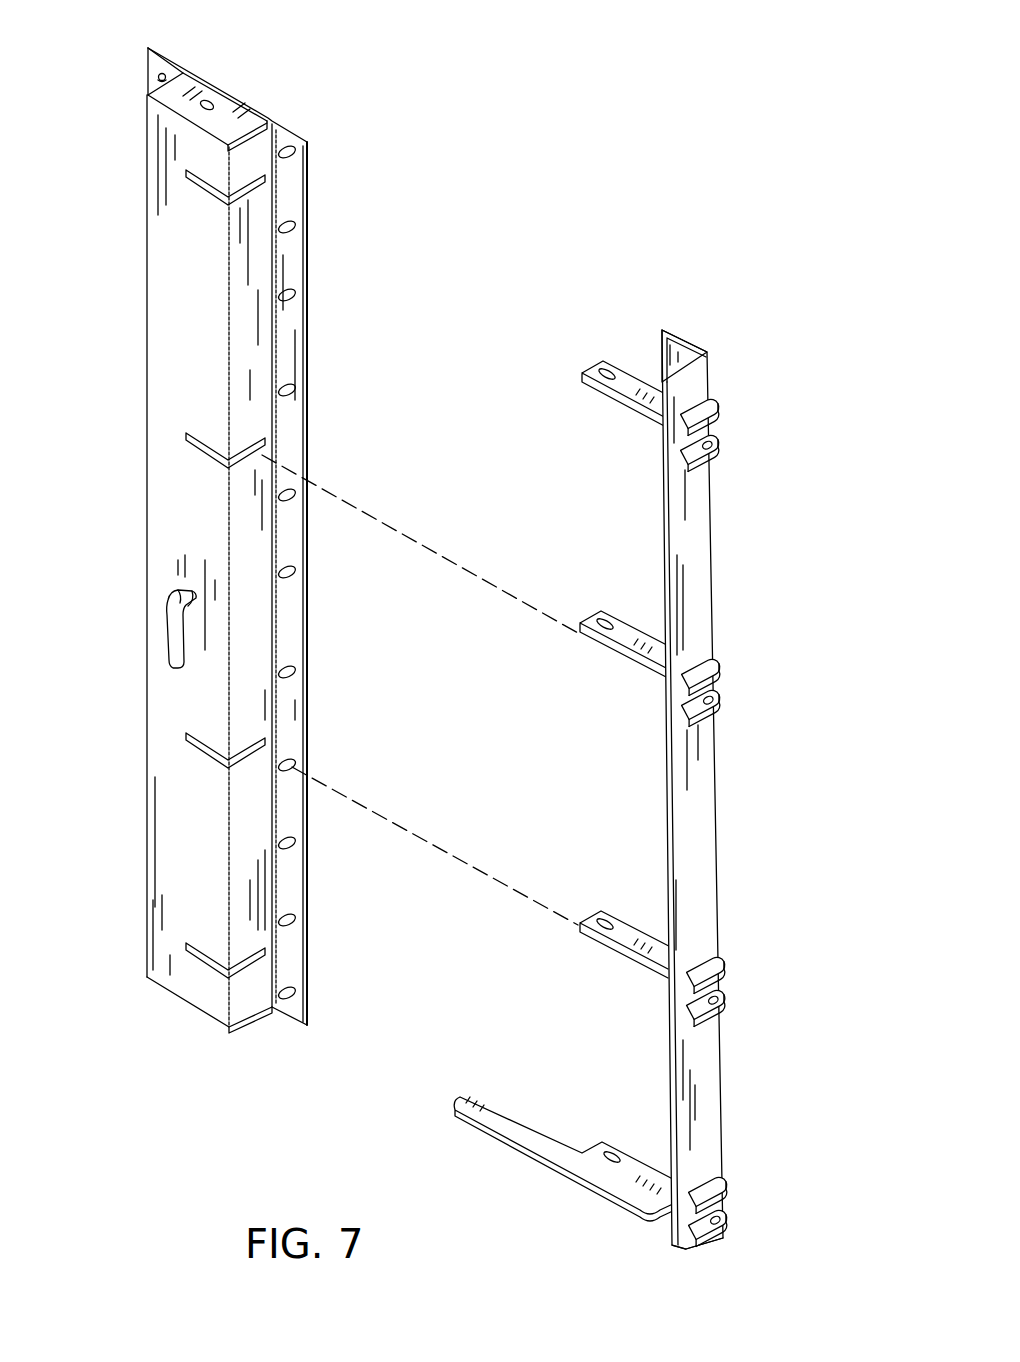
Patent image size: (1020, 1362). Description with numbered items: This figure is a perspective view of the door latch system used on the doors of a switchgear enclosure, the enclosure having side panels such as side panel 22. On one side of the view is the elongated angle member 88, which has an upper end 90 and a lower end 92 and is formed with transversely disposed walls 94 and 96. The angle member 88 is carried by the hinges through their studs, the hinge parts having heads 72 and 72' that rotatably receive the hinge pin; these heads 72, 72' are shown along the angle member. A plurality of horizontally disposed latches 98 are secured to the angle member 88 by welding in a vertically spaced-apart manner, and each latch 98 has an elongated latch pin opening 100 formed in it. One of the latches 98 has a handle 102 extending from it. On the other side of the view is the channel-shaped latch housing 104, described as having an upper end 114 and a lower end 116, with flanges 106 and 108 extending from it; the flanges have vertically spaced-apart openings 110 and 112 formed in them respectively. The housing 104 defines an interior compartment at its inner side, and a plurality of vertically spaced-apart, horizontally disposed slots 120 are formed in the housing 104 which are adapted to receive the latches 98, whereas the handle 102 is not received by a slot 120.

The side panel 22 is at (166, 626).
The head 72 is at (765, 798).
The head 72' is at (771, 839).
The elongated angle member 88 is at (705, 335).
The upper end 90 is at (680, 313).
The lower end 92 is at (698, 1248).
The wall 94 is at (682, 353).
The wall 96 is at (698, 555).
The latch 98 is at (615, 398).
The latch pin opening 100 is at (613, 907).
The handle 102 is at (528, 1135).
The channel-shaped latch housing 104 is at (330, 153).
The flange 106 is at (173, 65).
The flange 108 is at (290, 190).
The opening 110 is at (157, 78).
The opening 112 is at (290, 295).
The upper end 114 is at (250, 80).
The lower end 116 is at (232, 1040).
The slot 120 is at (192, 430).